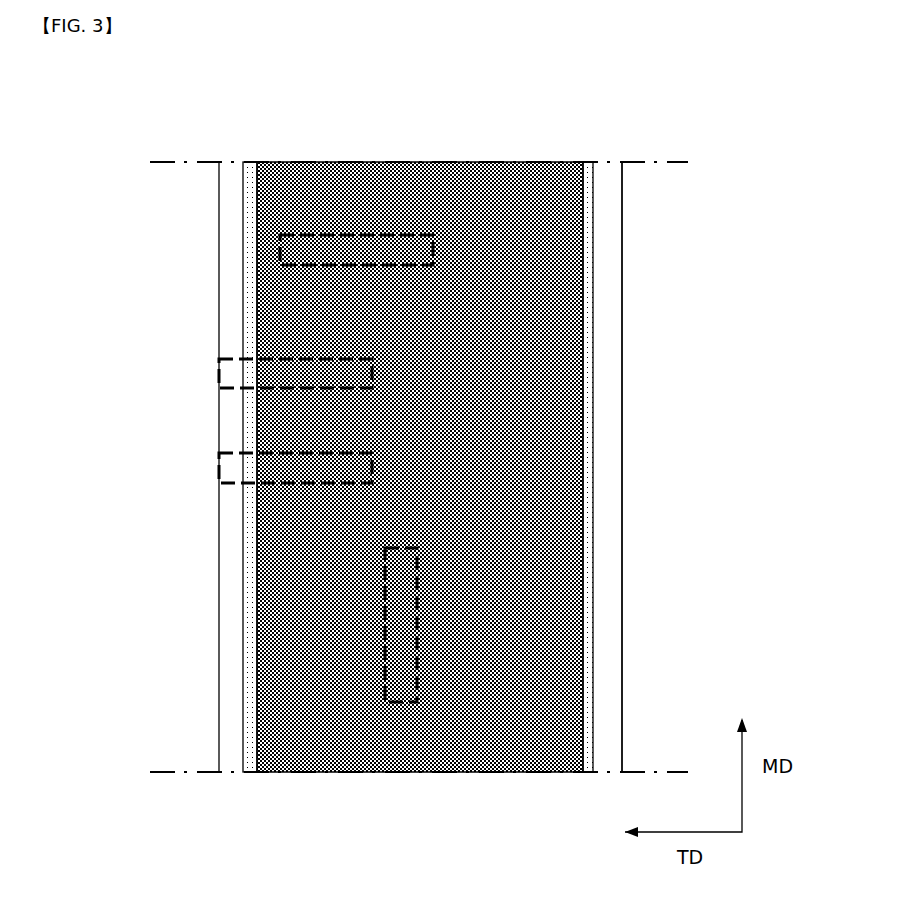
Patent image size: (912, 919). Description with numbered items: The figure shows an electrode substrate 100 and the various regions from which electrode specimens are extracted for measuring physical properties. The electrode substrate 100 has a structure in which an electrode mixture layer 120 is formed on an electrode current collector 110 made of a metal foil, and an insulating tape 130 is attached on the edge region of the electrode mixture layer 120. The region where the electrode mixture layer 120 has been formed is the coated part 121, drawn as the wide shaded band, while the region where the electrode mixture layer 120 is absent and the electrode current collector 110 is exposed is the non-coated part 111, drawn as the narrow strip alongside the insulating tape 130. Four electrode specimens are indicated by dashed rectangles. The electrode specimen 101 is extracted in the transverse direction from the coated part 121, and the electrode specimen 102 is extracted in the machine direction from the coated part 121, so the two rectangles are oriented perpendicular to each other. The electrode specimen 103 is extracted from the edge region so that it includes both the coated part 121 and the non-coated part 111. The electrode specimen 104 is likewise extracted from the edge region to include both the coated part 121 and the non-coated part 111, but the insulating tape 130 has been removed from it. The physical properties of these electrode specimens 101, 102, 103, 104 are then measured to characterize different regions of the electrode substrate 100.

The electrode substrate 100 is at (85, 122).
The electrode current collector 110 is at (622, 236).
The non-coated part 111 is at (610, 420).
The electrode mixture layer 120 is at (585, 455).
The coated part 121 is at (570, 594).
The insulating tape 130 is at (593, 345).
The electrode specimen 101 is at (280, 250).
The electrode specimen 102 is at (385, 628).
The electrode specimen 103 is at (258, 357).
The electrode specimen 104 is at (257, 443).